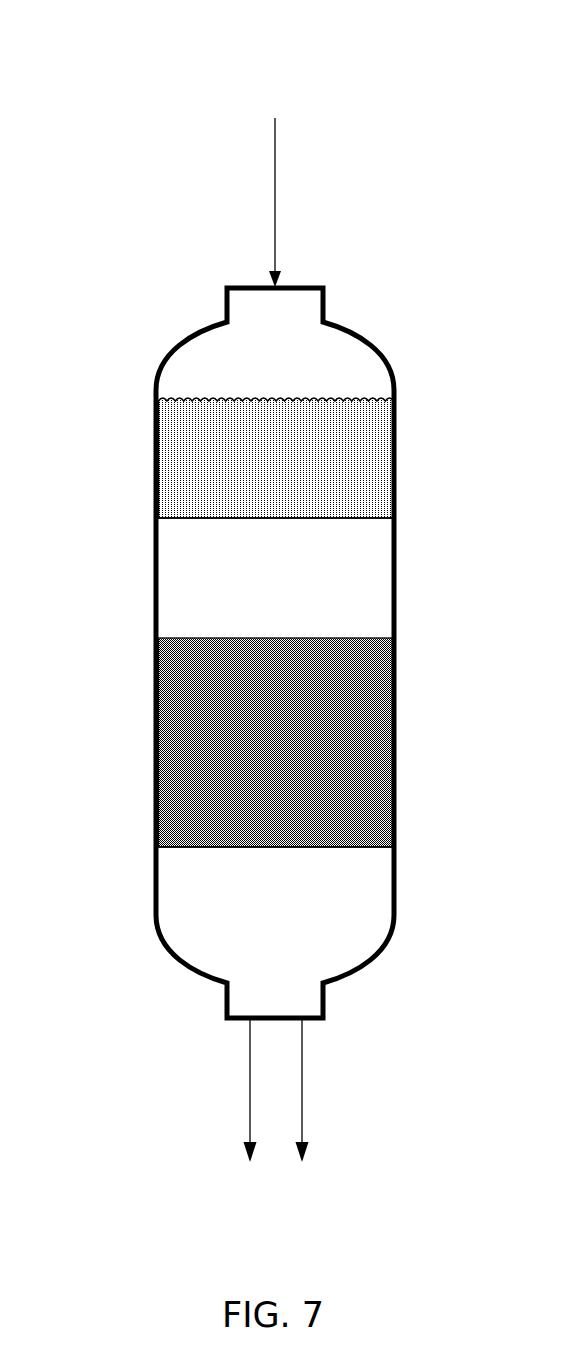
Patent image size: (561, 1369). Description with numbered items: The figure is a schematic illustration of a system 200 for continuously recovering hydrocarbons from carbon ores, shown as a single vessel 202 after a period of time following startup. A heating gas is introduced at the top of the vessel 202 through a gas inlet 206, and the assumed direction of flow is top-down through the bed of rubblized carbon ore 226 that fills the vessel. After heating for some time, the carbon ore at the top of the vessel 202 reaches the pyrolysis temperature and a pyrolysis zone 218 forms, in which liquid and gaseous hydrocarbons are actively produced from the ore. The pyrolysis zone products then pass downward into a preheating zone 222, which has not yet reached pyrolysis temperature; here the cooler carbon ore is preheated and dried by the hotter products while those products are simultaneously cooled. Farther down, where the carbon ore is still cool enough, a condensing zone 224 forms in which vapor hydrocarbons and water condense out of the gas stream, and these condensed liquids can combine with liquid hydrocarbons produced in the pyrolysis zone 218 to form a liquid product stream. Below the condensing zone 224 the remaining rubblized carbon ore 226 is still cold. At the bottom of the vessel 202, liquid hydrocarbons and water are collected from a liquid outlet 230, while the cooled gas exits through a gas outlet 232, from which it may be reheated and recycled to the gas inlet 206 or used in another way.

The water treatment system 200 is at (241, 56).
The vessel 202 is at (156, 373).
The gas inlet 206 is at (273, 170).
The pyrolysis zone 218 is at (253, 470).
The preheating zone 222 is at (253, 592).
The condensing zone 224 is at (253, 752).
The rubblized carbon ore 226 is at (253, 927).
The liquid outlet 230 is at (249, 1117).
The gas outlet 232 is at (303, 1095).